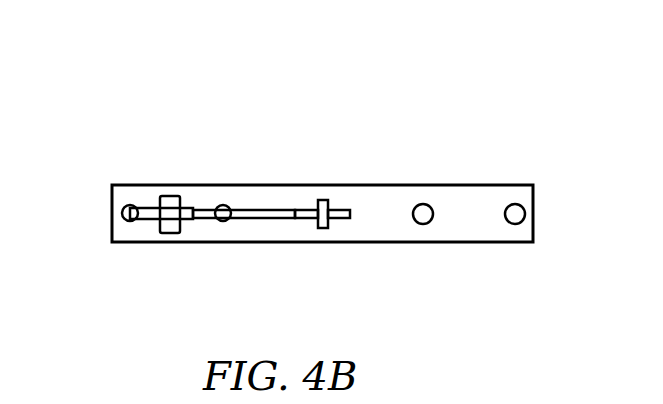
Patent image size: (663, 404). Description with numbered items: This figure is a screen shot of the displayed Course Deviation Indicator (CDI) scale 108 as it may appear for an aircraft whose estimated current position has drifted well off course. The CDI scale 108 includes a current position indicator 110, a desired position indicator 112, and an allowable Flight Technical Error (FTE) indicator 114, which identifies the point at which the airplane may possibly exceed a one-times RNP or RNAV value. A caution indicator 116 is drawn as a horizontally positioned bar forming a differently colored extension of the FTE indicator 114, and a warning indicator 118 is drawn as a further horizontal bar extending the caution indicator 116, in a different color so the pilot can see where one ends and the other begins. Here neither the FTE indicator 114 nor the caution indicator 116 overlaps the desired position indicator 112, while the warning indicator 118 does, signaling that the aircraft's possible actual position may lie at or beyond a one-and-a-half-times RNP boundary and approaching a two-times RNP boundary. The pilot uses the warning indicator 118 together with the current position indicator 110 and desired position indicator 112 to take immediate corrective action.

The Course Deviation Indicator (CDI) Scale 108 is at (490, 136).
The current position indicator 110 is at (323, 228).
The desired position indicator 112 is at (165, 195).
The allowable Flight Technical Error (FTE) indicator 114 is at (308, 208).
The caution indicator 116 is at (263, 208).
The warning indicator 118 is at (144, 208).